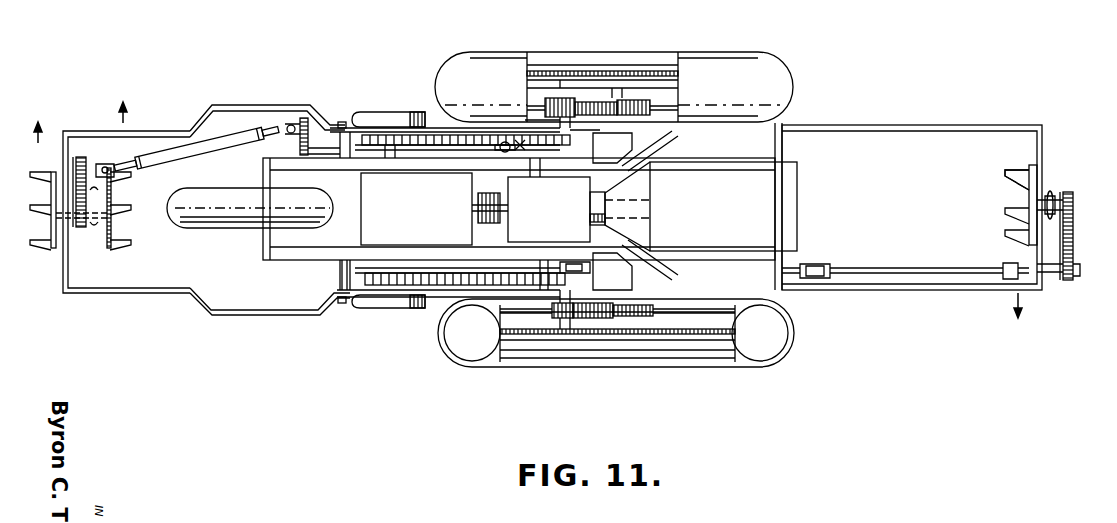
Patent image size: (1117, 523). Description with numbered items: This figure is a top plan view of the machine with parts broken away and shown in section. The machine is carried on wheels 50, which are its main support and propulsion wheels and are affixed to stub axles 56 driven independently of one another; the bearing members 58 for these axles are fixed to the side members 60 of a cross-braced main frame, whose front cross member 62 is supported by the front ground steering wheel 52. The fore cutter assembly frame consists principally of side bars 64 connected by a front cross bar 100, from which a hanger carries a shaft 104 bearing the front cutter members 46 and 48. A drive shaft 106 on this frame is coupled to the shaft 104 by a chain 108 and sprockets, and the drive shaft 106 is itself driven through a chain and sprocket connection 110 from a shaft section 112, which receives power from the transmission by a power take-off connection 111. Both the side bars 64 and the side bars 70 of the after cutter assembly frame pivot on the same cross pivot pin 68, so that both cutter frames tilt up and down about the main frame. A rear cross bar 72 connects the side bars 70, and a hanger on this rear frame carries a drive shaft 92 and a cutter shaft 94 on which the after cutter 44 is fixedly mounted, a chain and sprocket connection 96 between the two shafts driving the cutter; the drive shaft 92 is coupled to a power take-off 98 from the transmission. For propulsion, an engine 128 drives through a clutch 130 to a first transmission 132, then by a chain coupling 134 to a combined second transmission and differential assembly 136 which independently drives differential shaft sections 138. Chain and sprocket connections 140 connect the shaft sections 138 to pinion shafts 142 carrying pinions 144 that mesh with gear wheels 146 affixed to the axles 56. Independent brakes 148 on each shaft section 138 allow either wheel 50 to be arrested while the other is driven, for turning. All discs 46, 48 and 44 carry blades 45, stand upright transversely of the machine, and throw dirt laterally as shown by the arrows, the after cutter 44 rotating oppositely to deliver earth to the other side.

The after cutter 44 is at (1022, 188).
The blades 45 is at (45, 246).
The front cutter member 46 is at (53, 250).
The reverse front cutter member 48 is at (111, 250).
The wheels 50 is at (470, 54).
The front ground steering wheel 52 is at (210, 228).
The stub axles 56 is at (614, 96).
The bearing members 58 is at (660, 315).
The side members of main frame 60 is at (585, 163).
The front cross member 62 is at (266, 251).
The side bars of fore cutter assembly frame 64 is at (254, 105).
The cross pivot pin 68 is at (344, 277).
The side bars of after cutter assembly frame 70 is at (858, 130).
The rear cross bar 72 is at (1040, 153).
The drive shaft 92 is at (1072, 284).
The cutter shaft 94 is at (1078, 200).
The chain and sprocket connection 96 is at (1075, 241).
The power take-off 98 is at (544, 262).
The front cross bar 100 is at (66, 273).
The shaft 104 is at (100, 225).
The drive shaft 106 is at (96, 162).
The chain 108 is at (77, 193).
The chain and sprocket connection 110 is at (290, 141).
The power take-off connection 111 is at (535, 152).
The shaft section 112 is at (323, 150).
The engine 128 is at (701, 206).
The clutch 130 is at (640, 222).
The first transmission 132 is at (549, 209).
The chain coupling 134 is at (478, 204).
The combined second transmission and differential assembly 136 is at (416, 209).
The differential shaft sections 138 is at (388, 133).
The chain and sprocket connections 140 is at (437, 143).
The pinion shafts 142 is at (528, 115).
The pinions 144 is at (560, 97).
The gear wheels 146 is at (600, 92).
The brakes 148 is at (418, 112).